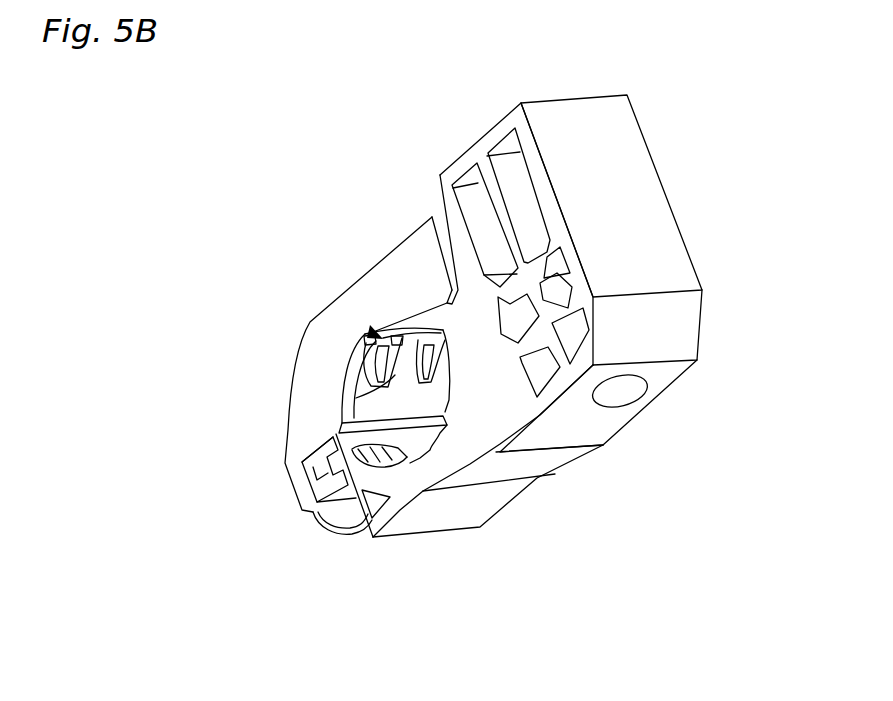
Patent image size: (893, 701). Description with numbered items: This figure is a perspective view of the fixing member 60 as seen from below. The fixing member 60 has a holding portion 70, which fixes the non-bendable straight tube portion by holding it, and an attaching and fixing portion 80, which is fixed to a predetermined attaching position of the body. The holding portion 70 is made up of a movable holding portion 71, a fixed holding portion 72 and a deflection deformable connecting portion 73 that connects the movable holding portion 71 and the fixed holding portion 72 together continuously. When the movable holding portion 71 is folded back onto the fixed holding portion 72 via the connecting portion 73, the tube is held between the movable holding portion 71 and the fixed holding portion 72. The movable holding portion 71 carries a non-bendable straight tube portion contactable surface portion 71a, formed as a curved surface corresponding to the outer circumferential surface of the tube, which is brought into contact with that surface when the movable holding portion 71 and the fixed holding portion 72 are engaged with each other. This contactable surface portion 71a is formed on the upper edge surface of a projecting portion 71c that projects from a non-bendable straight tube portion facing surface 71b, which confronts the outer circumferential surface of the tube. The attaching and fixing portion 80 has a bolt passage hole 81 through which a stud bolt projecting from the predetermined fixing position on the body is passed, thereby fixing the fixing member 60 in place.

The fixing member 60 is at (671, 113).
The holding portion 70 is at (383, 216).
The movable holding portion 71 is at (288, 329).
The non-bendable straight tube portion contactable surface portion 71a is at (420, 370).
The non-bendable straight tube portion facing surface 71b is at (356, 401).
The projecting portion 71c is at (370, 326).
The fixed holding portion 72 is at (476, 508).
The deflection deformable connecting portion 73 is at (330, 530).
The attaching and fixing portion 80 is at (668, 222).
The bolt passage hole 81 is at (622, 394).